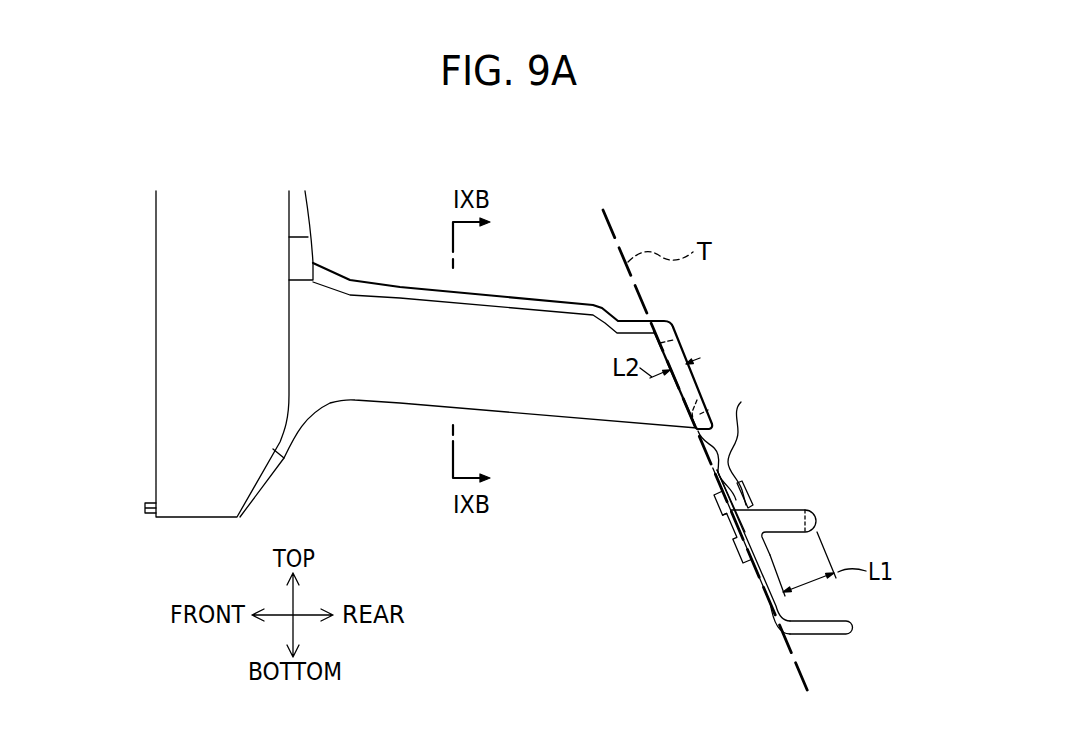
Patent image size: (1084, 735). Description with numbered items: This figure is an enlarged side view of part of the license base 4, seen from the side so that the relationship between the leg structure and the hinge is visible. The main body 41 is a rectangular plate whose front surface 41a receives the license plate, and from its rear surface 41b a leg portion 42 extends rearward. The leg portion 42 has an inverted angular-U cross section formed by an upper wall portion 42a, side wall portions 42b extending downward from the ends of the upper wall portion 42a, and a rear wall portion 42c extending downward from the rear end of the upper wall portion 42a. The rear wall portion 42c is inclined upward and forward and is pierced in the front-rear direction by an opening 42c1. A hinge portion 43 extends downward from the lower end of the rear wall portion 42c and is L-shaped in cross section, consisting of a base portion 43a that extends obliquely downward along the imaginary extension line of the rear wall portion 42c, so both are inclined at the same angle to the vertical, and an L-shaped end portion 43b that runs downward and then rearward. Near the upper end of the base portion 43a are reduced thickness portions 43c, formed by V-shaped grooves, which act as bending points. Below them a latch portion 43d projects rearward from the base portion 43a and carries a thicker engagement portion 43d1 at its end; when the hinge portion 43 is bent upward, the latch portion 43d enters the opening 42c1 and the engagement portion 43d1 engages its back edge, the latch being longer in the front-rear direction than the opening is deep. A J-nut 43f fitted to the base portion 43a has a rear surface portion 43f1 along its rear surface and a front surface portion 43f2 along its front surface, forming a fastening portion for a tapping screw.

The license base 4 is at (322, 204).
The main body 41 is at (182, 297).
The front surface 41a is at (156, 353).
The rear surface 41b is at (284, 459).
The leg portion 42 is at (537, 364).
The upper wall portion 42a is at (547, 303).
The side wall portion 42b is at (397, 374).
The rear wall portion 42c is at (681, 350).
The opening 42c1 is at (697, 400).
The hinge portion 43 is at (772, 508).
The base portion 43a is at (747, 487).
The L-shaped end portion 43b is at (850, 621).
The reduced thickness portion 43c is at (741, 402).
The latch portion 43d is at (778, 510).
The engagement portion 43d1 is at (822, 521).
The J-nut 43f is at (712, 496).
The rear surface portion 43f1 is at (754, 500).
The front surface portion 43f2 is at (724, 516).